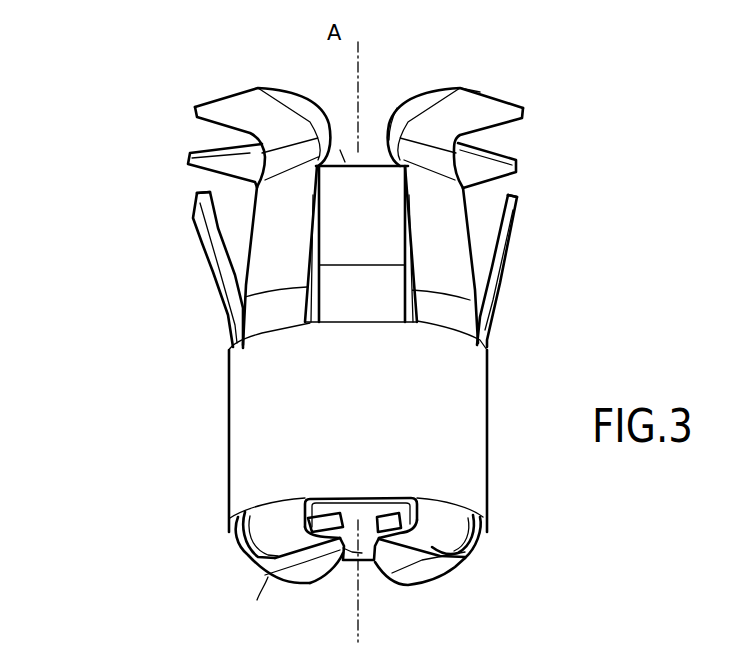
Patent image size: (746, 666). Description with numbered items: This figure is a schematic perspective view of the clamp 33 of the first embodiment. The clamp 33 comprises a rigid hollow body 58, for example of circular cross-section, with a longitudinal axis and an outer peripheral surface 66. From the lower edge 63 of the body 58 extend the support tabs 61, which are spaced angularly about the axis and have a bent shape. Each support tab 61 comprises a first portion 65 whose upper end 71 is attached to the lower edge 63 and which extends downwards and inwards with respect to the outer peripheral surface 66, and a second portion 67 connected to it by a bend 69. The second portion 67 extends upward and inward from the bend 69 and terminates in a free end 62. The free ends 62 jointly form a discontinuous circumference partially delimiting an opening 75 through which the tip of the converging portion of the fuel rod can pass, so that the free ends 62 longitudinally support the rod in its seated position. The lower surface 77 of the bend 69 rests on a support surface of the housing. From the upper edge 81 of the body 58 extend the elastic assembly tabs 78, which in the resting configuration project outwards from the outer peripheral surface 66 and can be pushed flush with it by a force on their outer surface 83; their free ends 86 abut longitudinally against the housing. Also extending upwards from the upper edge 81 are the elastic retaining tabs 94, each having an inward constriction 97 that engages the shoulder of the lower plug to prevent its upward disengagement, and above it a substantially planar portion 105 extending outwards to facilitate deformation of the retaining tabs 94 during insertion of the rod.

The clamp 33 is at (165, 380).
The hollow body 58 is at (229, 421).
The support tabs 61 is at (240, 541).
The free end 62 is at (372, 515).
The lower edge 63 is at (357, 497).
The first portion 65 is at (470, 555).
The outer peripheral surface 66 is at (470, 428).
The second portion 67 is at (407, 565).
The bend 69 is at (457, 570).
The upper end 71 is at (455, 508).
The opening 75 is at (345, 570).
The lower surface 77 is at (273, 583).
The elastic assembly tabs 78 is at (205, 283).
The upper edge 81 is at (362, 323).
The outer surface 83 is at (205, 245).
The free ends 86 is at (347, 165).
The elastic retaining tabs 94 is at (213, 100).
The constriction 97 is at (397, 123).
The substantially planar portion 105 is at (455, 95).